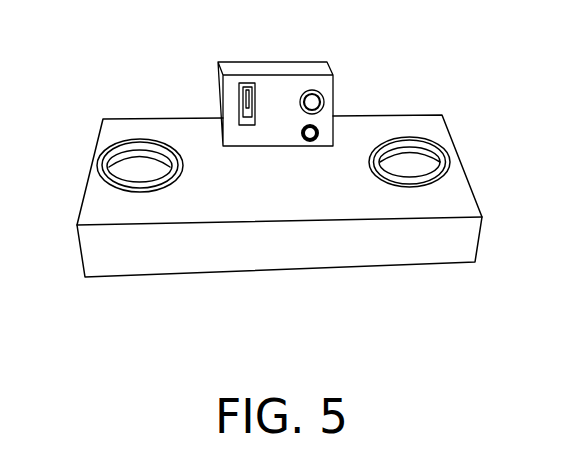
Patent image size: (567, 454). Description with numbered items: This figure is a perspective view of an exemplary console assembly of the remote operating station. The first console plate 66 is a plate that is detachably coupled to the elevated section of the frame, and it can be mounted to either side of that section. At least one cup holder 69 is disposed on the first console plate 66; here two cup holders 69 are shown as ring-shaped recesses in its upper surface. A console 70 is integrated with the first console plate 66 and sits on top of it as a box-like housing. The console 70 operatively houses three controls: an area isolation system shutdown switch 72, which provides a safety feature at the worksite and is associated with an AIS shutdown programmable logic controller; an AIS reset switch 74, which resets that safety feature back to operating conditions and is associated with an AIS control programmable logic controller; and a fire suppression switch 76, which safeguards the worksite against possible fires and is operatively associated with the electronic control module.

The first console plate 66 is at (462, 205).
The cup holder 69 is at (125, 155).
The console 70 is at (258, 72).
The area isolation system (AIS) shutdown switch 72 is at (312, 102).
The AIS reset switch 74 is at (310, 133).
The fire suppression switch 76 is at (247, 98).